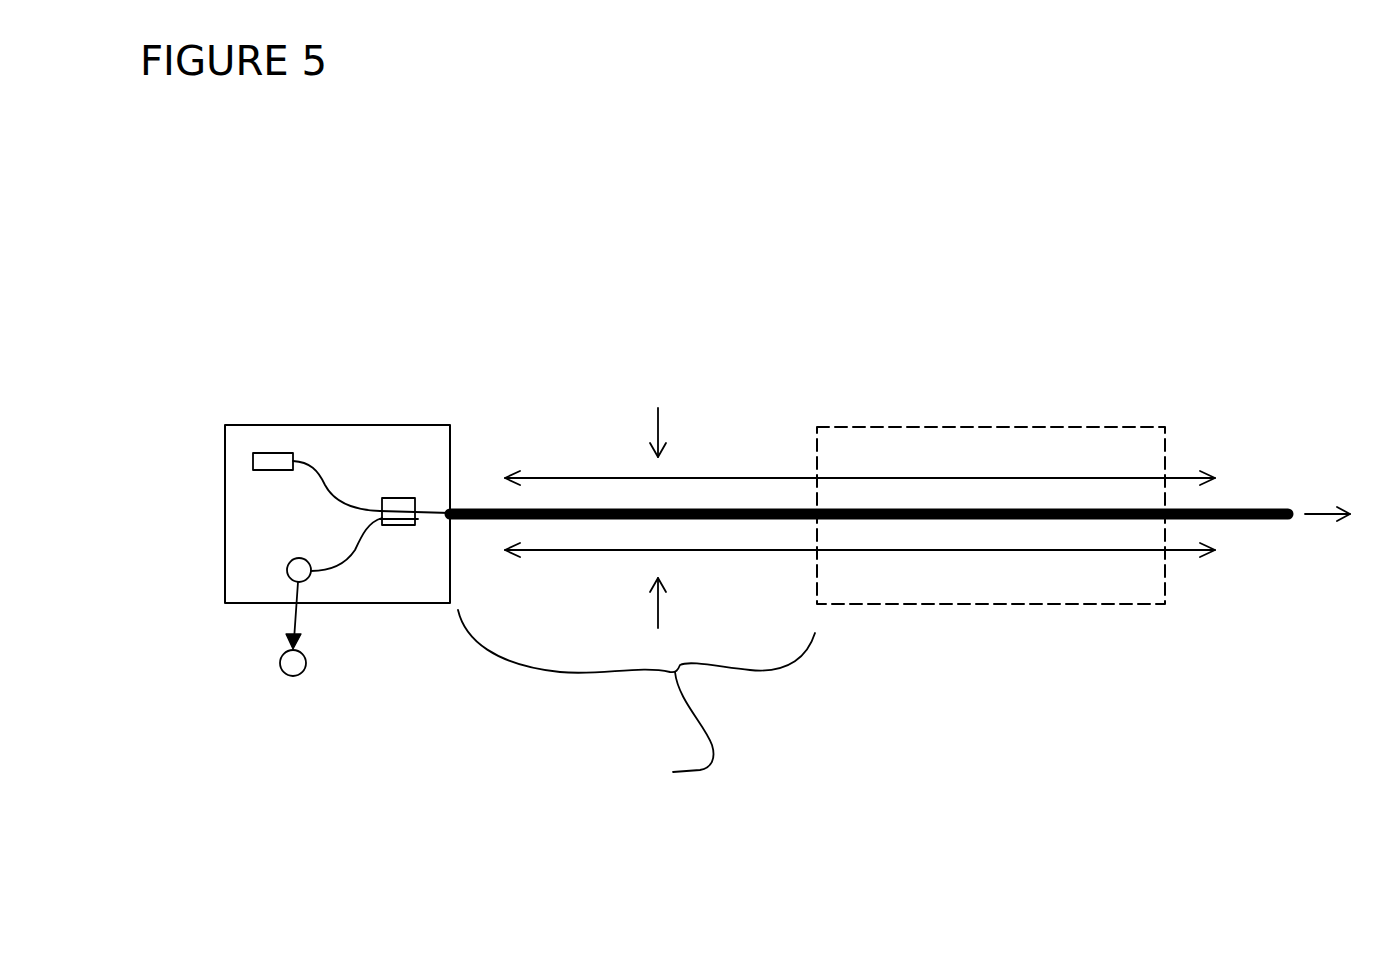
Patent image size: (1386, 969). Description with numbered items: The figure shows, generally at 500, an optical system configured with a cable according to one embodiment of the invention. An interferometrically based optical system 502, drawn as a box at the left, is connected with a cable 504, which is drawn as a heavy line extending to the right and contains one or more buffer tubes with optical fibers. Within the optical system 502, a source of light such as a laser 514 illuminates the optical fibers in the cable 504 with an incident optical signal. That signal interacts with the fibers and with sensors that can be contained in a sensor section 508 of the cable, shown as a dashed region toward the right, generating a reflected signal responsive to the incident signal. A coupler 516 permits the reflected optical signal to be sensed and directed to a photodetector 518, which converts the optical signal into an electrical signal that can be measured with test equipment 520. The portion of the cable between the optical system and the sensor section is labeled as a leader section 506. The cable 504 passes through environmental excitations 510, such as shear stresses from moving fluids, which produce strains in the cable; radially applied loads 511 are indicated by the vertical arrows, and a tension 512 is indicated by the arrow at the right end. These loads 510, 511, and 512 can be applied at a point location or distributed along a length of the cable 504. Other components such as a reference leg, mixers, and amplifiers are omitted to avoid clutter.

The optical system 500 is at (1190, 143).
The interferometrically based optical system 502 is at (717, 230).
The cable 504 is at (1233, 508).
The leader section 506 is at (604, 698).
The sensor section 508 is at (1050, 427).
The environmental excitations 510 is at (602, 478).
The radially applied loads 511 is at (658, 423).
The tension 512 is at (1320, 514).
The laser 514 is at (266, 457).
The coupler 516 is at (400, 497).
The photodetector 518 is at (287, 570).
The test equipment 520 is at (281, 665).